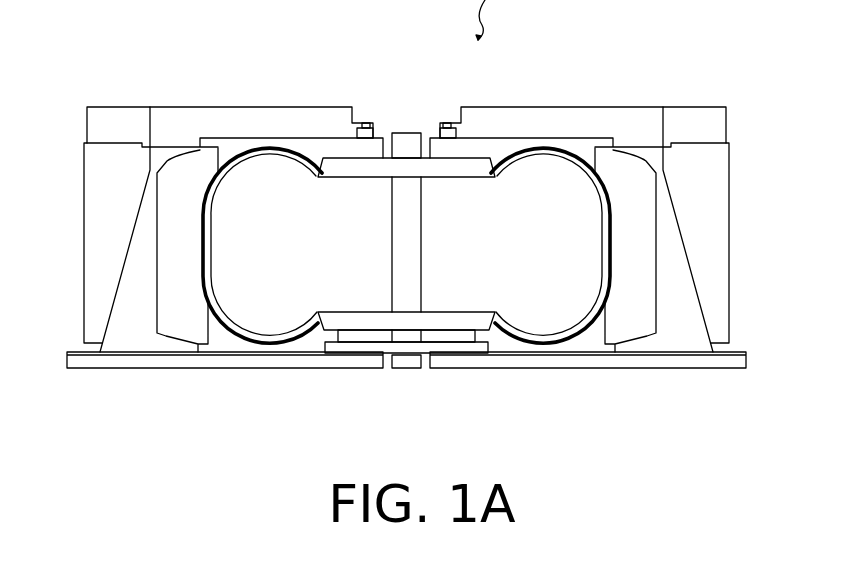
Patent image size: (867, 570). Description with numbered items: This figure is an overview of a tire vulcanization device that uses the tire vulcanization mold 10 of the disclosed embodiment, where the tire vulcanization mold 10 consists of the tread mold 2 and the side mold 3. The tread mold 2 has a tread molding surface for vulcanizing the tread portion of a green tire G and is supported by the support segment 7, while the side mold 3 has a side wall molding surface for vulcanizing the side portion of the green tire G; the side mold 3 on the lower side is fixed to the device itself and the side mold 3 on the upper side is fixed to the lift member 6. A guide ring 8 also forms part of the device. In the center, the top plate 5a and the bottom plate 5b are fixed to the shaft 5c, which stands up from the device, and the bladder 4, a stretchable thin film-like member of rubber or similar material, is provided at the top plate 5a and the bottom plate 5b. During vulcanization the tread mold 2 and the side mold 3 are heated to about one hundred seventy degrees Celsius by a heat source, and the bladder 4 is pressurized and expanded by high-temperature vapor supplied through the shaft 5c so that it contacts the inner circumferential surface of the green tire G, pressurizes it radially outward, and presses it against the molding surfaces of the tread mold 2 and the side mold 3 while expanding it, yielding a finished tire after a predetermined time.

The tire vulcanization mold 10 is at (196, 53).
The tread mold 2 is at (212, 160).
The side mold 3 is at (240, 142).
The bladder 4 is at (280, 151).
The top plate 5a is at (372, 172).
The bottom plate 5b is at (370, 326).
The shaft 5c is at (407, 149).
The lift member 6 is at (318, 125).
The support segment 7 is at (120, 338).
The guide ring 8 is at (100, 211).
The green tire G is at (562, 352).